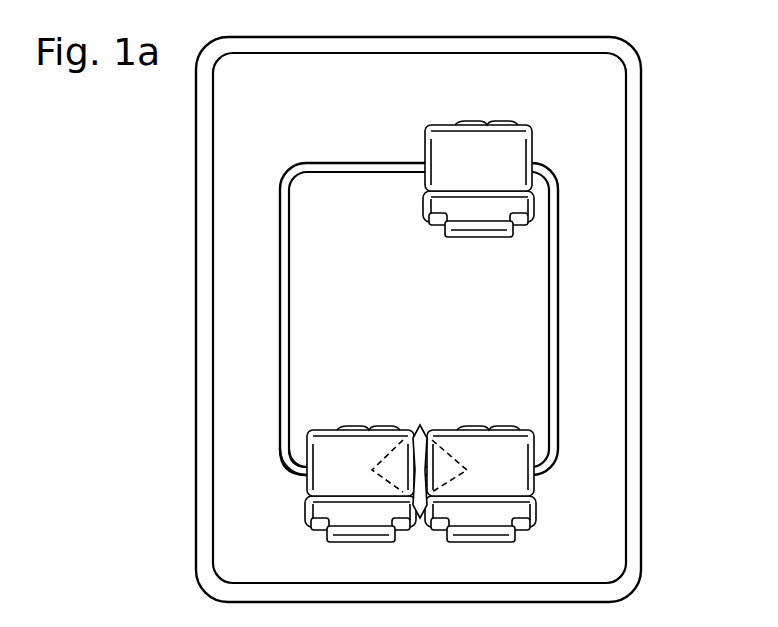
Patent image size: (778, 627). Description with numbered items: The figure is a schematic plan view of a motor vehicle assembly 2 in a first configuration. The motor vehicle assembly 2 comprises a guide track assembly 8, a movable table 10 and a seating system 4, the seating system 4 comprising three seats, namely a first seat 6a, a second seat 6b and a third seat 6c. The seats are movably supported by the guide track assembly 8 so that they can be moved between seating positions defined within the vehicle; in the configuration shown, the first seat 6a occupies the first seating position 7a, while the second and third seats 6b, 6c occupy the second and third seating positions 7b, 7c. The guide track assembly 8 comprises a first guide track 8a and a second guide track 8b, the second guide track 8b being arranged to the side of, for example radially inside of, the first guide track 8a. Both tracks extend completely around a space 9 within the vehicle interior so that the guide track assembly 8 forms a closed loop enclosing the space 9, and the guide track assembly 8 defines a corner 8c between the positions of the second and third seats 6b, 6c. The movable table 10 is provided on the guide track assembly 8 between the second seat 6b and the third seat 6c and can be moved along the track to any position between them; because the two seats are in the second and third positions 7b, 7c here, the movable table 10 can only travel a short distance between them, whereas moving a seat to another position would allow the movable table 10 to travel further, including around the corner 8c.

The motor vehicle assembly 2 is at (677, 96).
The seating system 4 is at (600, 222).
The first seat 6a is at (441, 146).
The second seat 6b is at (325, 452).
The third seat 6c is at (510, 450).
The first seating position 7a is at (531, 146).
The second seating position 7b is at (362, 430).
The third seating position 7c is at (478, 430).
The guide track assembly 8 is at (476, 347).
The first guide track 8a is at (559, 330).
The second guide track 8b is at (549, 270).
The corner 8c is at (288, 470).
The space 9 is at (427, 304).
The movable table 10 is at (420, 424).